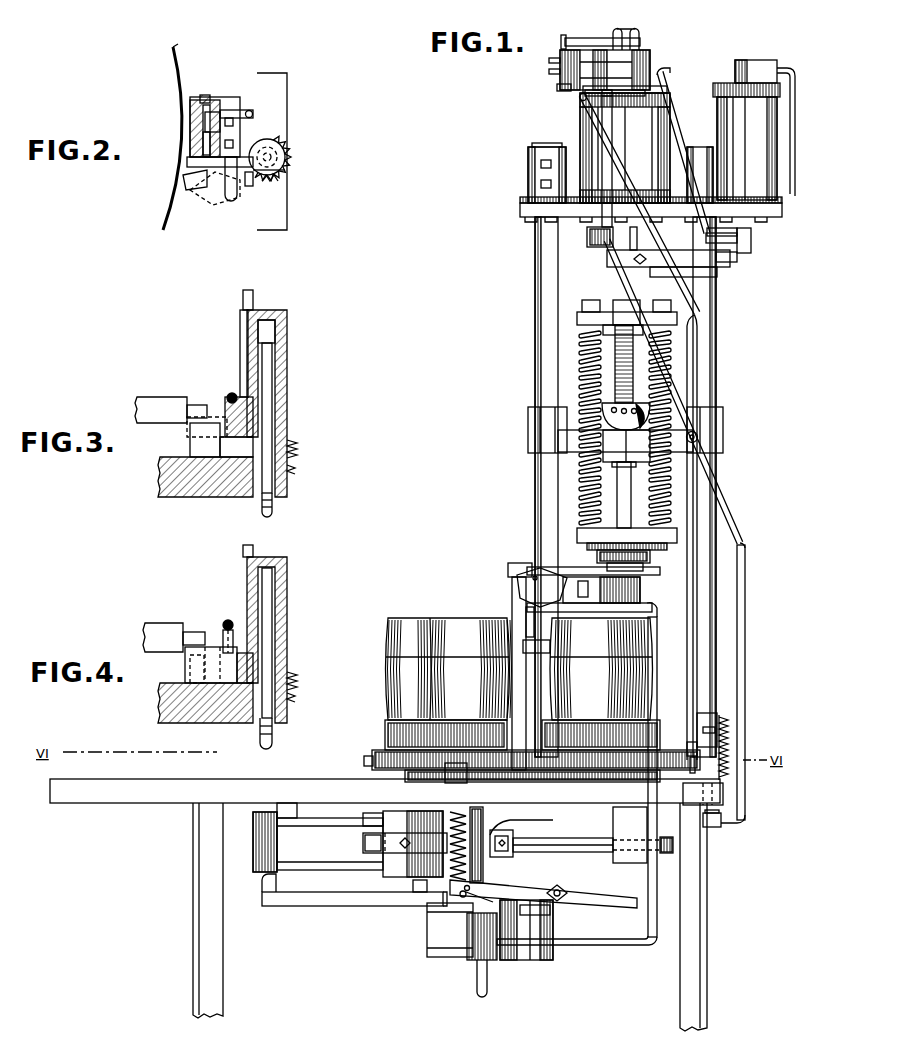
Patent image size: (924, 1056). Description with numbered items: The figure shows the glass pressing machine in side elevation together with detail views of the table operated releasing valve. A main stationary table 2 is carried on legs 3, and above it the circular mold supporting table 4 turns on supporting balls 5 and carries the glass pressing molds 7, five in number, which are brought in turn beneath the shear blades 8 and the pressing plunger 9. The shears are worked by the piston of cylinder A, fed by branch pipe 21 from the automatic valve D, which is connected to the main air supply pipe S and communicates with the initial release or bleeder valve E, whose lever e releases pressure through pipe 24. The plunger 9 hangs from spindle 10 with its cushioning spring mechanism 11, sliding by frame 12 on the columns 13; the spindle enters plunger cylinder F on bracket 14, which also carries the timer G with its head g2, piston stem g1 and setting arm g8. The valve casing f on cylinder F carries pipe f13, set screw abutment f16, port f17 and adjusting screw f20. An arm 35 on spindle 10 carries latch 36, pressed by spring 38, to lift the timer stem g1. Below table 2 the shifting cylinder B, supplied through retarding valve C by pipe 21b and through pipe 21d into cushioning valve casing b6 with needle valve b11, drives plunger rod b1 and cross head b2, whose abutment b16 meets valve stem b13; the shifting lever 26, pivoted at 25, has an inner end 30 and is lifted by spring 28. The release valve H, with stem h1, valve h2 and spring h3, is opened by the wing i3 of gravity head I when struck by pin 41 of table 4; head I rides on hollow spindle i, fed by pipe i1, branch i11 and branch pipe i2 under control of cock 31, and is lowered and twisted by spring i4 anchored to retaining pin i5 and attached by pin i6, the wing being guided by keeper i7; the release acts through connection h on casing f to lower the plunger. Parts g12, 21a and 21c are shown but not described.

In FIG. 1, the pipe f13 is at (597, 30).
In FIG. 1, the main air supply pipe S is at (641, 36).
In FIG. 1, the valve casing f is at (617, 68).
In FIG. 1, the screw f20 is at (549, 61).
In FIG. 1, the set screw abutment f16 is at (549, 72).
In FIG. 1, the port f17 is at (560, 89).
In FIG. 1, the connection h is at (583, 101).
In FIG. 2, the connection h is at (243, 116).
In FIG. 1, the branch pipe i2 is at (602, 128).
In FIG. 1, the plunger cylinder F is at (625, 144).
In FIG. 1, the inclined rod g12 is at (684, 138).
In FIG. 1, the timer G is at (746, 141).
In FIG. 1, the head g2 is at (754, 60).
In FIG. 1, the arm g8 is at (793, 194).
In FIG. 1, the supporting bracket 14 is at (520, 210).
In FIG. 1, the columns 13 is at (535, 291).
In FIG. 1, the branch i11 is at (591, 247).
In FIG. 1, the arm 35 is at (720, 284).
In FIG. 1, the spring 38 is at (727, 268).
In FIG. 1, the latch 36 is at (738, 263).
In FIG. 1, the stem g1 is at (751, 241).
In FIG. 1, the spindle 10 is at (624, 495).
In FIG. 1, the spring mechanism 11 is at (580, 381).
In FIG. 1, the frame 12 is at (528, 432).
In FIG. 1, the valve or cock 31 is at (700, 438).
In FIG. 1, the lever e is at (660, 573).
In FIG. 1, the pressing plunger 9 is at (640, 589).
In FIG. 1, the shear blades 8 is at (540, 607).
In FIG. 1, the initial release or bleeder valve E is at (540, 572).
In FIG. 1, the cylinder A is at (510, 576).
In FIG. 1, the branch pipe 21 is at (512, 592).
In FIG. 1, the collar 21a is at (526, 617).
In FIG. 1, the glass pressing molds 7 is at (522, 684).
In FIG. 1, the mold supporting table 4 is at (376, 756).
In FIG. 2, the mold supporting table 4 is at (170, 220).
In FIG. 3, the mold supporting table 4 is at (148, 403).
In FIG. 4, the mold supporting table 4 is at (143, 631).
In FIG. 1, the pin 41 is at (364, 762).
In FIG. 2, the pin 41 is at (178, 185).
In FIG. 3, the pin 41 is at (188, 404).
In FIG. 4, the pin 41 is at (188, 630).
In FIG. 1, the supporting balls 5 is at (405, 775).
In FIG. 1, the main stationary table 2 is at (144, 790).
In FIG. 2, the main stationary table 2 is at (287, 81).
In FIG. 3, the main stationary table 2 is at (200, 488).
In FIG. 4, the main stationary table 2 is at (222, 717).
In FIG. 1, the columns or legs 3 is at (198, 955).
In FIG. 1, the shifting cylinder B is at (348, 840).
In FIG. 1, the pipe 21b is at (336, 900).
In FIG. 1, the screw needle valve b11 is at (394, 853).
In FIG. 1, the cushioning valve casing b6 is at (378, 851).
In FIG. 1, the pipe 21d is at (418, 898).
In FIG. 1, the retarding valve C is at (462, 931).
In FIG. 1, the spring 28 is at (483, 804).
In FIG. 1, the stem b13 is at (553, 821).
In FIG. 1, the abutment b16 is at (550, 852).
In FIG. 1, the plunger rod b1 is at (603, 863).
In FIG. 1, the inner end of lever 30 is at (617, 904).
In FIG. 1, the pivot 25 is at (462, 898).
In FIG. 1, the shifting lever 26 is at (513, 960).
In FIG. 1, the cross head b2 is at (552, 958).
In FIG. 1, the automatic valve D is at (550, 919).
In FIG. 1, the rod 21c is at (477, 988).
In FIG. 1, the pipe 24 is at (657, 889).
In FIG. 1, the pipe i1 is at (740, 649).
In FIG. 3, the pipe i1 is at (273, 511).
In FIG. 4, the pipe i1 is at (273, 743).
In FIG. 1, the gravity head I is at (720, 717).
In FIG. 2, the gravity head I is at (280, 145).
In FIG. 3, the gravity head I is at (277, 312).
In FIG. 4, the gravity head I is at (287, 589).
In FIG. 1, the pin or attachment i6 is at (712, 731).
In FIG. 2, the pin or attachment i6 is at (250, 188).
In FIG. 1, the loop or keeper device i7 is at (697, 767).
In FIG. 2, the loop or keeper device i7 is at (229, 201).
In FIG. 3, the loop or keeper device i7 is at (237, 393).
In FIG. 4, the loop or keeper device i7 is at (228, 618).
In FIG. 1, the wing i3 is at (698, 795).
In FIG. 2, the wing i3 is at (190, 163).
In FIG. 3, the wing i3 is at (215, 406).
In FIG. 4, the wing i3 is at (187, 670).
In FIG. 2, the release valve H is at (215, 115).
In FIG. 2, the spring h3 is at (193, 110).
In FIG. 2, the valve h2 is at (193, 129).
In FIG. 2, the valve stem h1 is at (190, 155).
In FIG. 3, the valve stem h1 is at (187, 431).
In FIG. 4, the valve stem h1 is at (202, 714).
In FIG. 2, the retaining pin i5 is at (290, 147).
In FIG. 3, the retaining pin i5 is at (296, 469).
In FIG. 4, the retaining pin i5 is at (296, 696).
In FIG. 2, the spring i4 is at (287, 184).
In FIG. 3, the spring i4 is at (297, 448).
In FIG. 4, the spring i4 is at (297, 679).
In FIG. 3, the hollow spindle i is at (268, 373).
In FIG. 4, the hollow spindle i is at (275, 624).